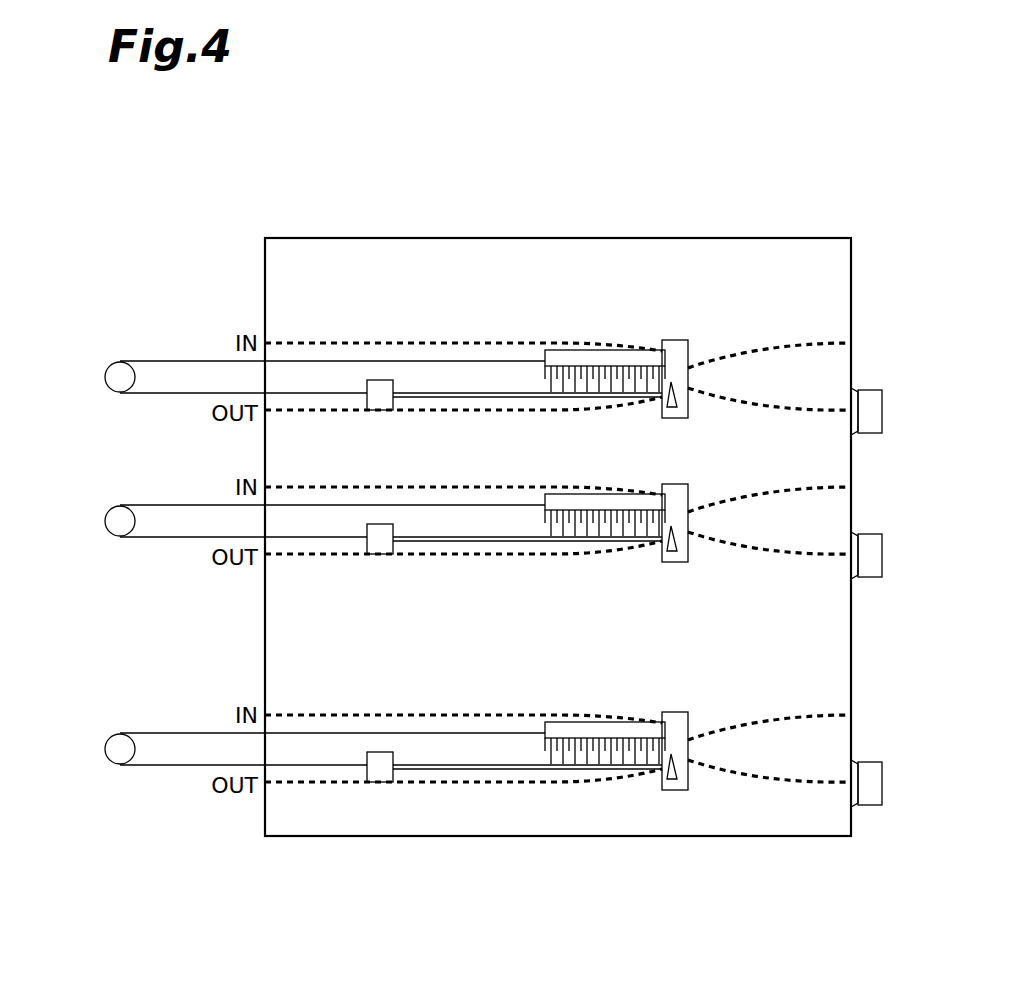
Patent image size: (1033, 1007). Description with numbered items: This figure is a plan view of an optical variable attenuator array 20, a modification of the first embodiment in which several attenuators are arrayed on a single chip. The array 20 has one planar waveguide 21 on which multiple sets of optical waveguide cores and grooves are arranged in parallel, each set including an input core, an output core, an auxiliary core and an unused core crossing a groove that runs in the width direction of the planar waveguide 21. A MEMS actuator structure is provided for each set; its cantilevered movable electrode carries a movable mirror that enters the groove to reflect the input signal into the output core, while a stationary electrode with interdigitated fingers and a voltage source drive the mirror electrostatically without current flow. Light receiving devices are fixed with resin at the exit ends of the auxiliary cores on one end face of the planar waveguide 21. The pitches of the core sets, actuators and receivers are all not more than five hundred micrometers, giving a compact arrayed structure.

The optical variable attenuator array 20 is at (196, 234).
The planar waveguide 21 is at (418, 262).